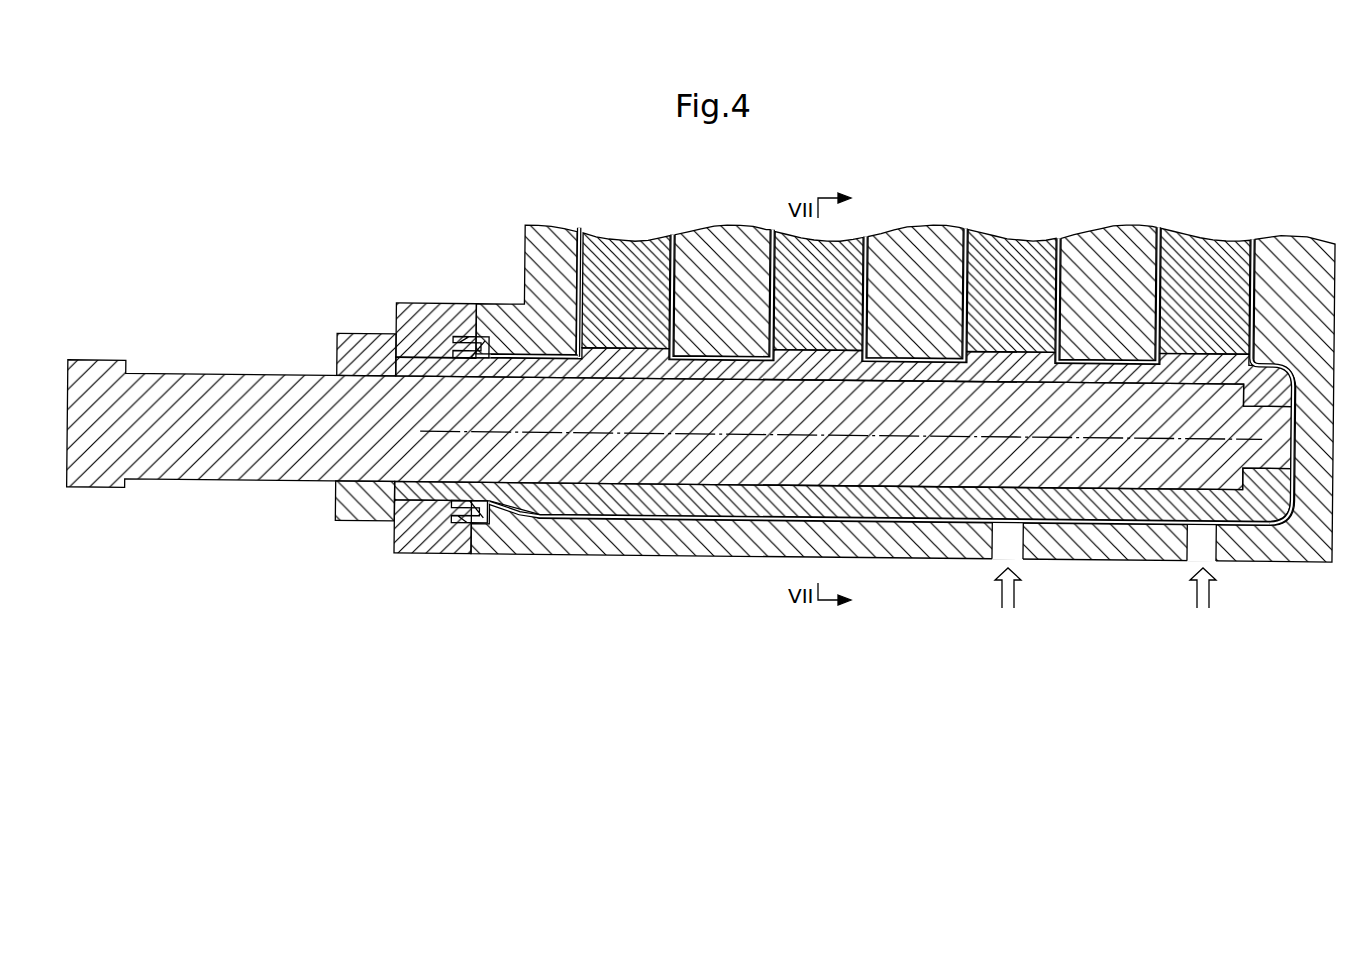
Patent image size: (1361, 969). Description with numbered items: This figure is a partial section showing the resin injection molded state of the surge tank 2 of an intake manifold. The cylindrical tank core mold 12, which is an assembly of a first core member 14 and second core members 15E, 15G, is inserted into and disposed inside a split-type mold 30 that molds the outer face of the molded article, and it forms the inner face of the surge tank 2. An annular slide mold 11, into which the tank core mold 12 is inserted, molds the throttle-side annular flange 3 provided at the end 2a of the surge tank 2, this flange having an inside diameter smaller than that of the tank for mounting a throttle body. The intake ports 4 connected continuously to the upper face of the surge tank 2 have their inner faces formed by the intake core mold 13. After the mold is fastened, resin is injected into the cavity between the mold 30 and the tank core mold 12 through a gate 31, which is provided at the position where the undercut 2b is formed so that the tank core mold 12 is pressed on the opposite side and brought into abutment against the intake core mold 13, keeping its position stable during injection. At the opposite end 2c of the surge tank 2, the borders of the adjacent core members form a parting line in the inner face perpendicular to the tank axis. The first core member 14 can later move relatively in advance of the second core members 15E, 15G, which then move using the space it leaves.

The surge tank 2 is at (1092, 530).
The end of the surge tank 2a is at (512, 352).
The undercut 2b is at (530, 505).
The end of the surge tank 2c is at (1297, 488).
The annular flange 3 is at (485, 523).
The intake ports 4 is at (672, 275).
The slide mold 11 is at (425, 556).
The tank core mold 12 is at (715, 522).
The intake core mold 13 is at (622, 240).
The first core member 14 is at (190, 372).
The second core member 15E is at (364, 333).
The second core member 15G is at (364, 522).
The mold 30 is at (608, 555).
The gate 31 is at (1005, 556).